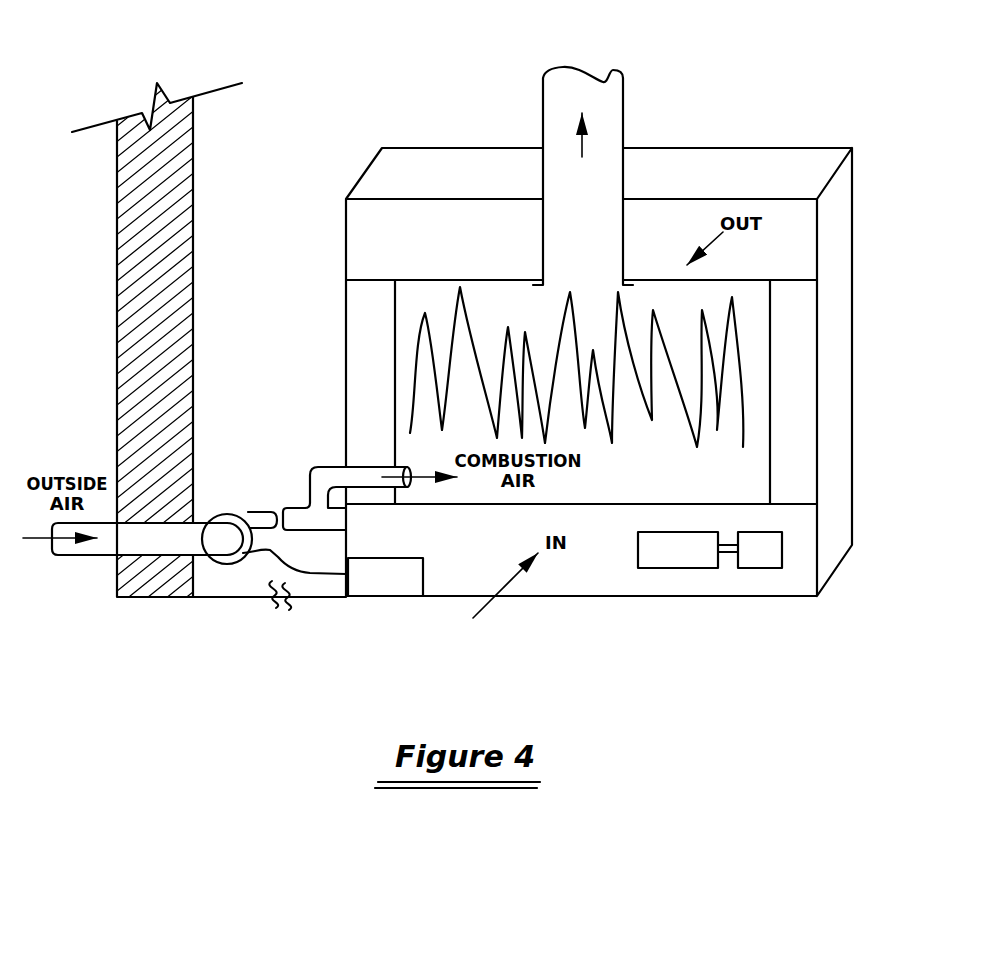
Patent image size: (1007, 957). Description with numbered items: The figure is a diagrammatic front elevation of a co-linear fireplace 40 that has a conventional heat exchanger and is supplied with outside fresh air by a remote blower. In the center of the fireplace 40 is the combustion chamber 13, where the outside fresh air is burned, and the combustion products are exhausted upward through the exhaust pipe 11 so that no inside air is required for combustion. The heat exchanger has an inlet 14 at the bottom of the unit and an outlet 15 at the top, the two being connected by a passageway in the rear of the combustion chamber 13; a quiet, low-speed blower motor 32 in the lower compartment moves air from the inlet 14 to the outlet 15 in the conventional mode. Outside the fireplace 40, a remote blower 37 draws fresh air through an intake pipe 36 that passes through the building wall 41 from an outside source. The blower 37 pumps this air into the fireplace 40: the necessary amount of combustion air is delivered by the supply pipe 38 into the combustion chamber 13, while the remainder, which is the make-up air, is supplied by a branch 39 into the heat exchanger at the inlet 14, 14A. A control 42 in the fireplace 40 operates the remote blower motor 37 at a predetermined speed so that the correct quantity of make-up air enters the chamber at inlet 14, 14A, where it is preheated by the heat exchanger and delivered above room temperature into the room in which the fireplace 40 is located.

The exhaust pipe 11 is at (625, 105).
The combustion chamber 13 is at (544, 320).
The heat exchanger inlet 14 is at (770, 558).
The heat exchanger inlet 14A is at (469, 557).
The heat exchanger outlet 15 is at (842, 187).
The blower motor 32 is at (690, 557).
The intake pipe 36 is at (93, 548).
The remote blower 37 is at (230, 508).
The supply pipe 38 is at (326, 466).
The branch 39 is at (323, 532).
The co-linear fireplace 40 is at (750, 112).
The building wall 41 is at (183, 173).
The control 42 is at (400, 590).